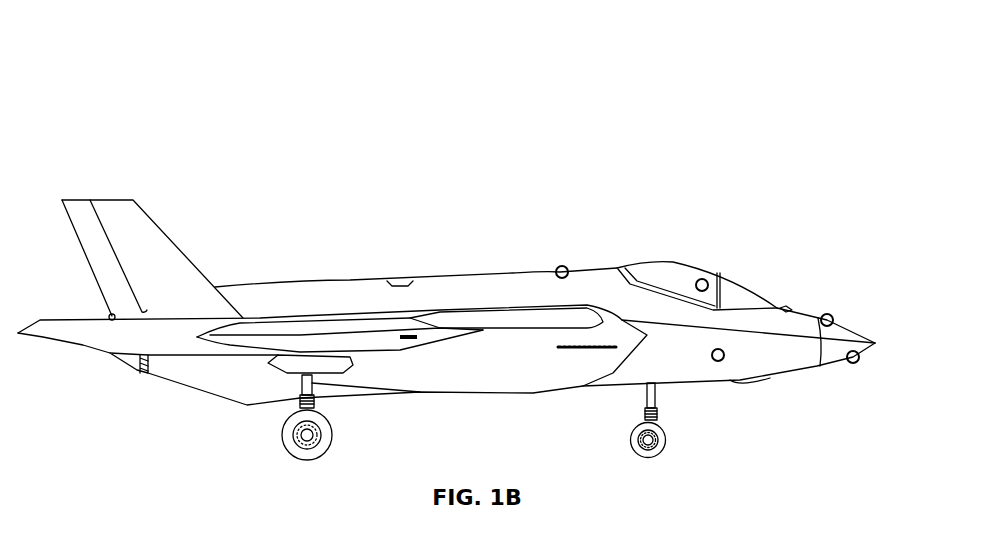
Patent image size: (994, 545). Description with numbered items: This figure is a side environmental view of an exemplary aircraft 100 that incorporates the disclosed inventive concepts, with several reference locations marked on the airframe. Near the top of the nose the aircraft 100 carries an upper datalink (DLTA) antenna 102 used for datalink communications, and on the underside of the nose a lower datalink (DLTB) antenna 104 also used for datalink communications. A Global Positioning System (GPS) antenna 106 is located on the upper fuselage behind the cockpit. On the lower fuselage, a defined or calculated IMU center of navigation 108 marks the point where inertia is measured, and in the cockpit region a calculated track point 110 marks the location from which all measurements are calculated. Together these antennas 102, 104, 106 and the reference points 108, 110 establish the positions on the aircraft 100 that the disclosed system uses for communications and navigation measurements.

The aircraft 100 is at (170, 124).
The upper datalink (DLTA) antenna 102 is at (833, 319).
The lower datalink (DLTB) antenna 104 is at (859, 357).
The Global Positioning System (GPS) antenna 106 is at (568, 268).
The IMU center of navigation 108 is at (716, 361).
The calculated track point 110 is at (702, 279).